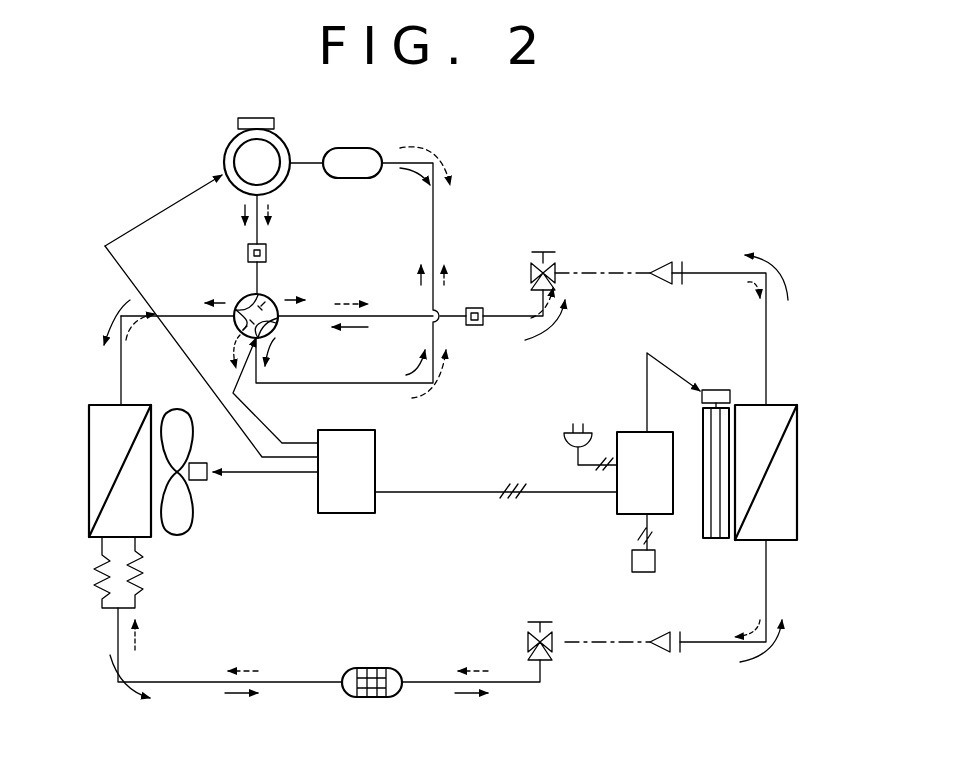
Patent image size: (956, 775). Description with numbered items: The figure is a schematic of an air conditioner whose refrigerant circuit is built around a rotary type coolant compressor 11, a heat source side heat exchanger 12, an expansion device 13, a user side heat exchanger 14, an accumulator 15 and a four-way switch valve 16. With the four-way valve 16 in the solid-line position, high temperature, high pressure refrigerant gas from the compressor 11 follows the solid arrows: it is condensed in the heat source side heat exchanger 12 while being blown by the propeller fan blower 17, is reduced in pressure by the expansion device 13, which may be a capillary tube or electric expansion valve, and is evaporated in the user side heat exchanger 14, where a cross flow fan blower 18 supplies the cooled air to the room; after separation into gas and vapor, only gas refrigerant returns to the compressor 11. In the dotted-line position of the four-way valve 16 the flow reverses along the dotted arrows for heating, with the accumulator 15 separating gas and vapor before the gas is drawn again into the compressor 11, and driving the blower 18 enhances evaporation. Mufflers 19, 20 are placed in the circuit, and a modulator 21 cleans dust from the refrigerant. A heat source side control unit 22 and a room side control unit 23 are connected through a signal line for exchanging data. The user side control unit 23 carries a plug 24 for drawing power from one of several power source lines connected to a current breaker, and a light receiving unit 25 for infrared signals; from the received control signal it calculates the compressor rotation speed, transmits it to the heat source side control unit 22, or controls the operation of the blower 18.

The rotary type coolant compressor 11 is at (222, 150).
The heat source side heat exchanger 12 is at (89, 515).
The expansion device 13 is at (98, 570).
The user side heat exchanger 14 is at (782, 540).
The accumulator 15 is at (370, 178).
The four-way switch valve 16 is at (268, 299).
The blower (propeller fan) 17 is at (183, 532).
The blower (cross flow fan) 18 is at (714, 538).
The muffler 19 is at (266, 252).
The muffler 20 is at (475, 308).
The modulator 21 is at (380, 668).
The heat source side control unit 22 is at (347, 513).
The room side control unit 23 is at (628, 514).
The plug 24 is at (565, 435).
The light receiving unit 25 is at (642, 572).